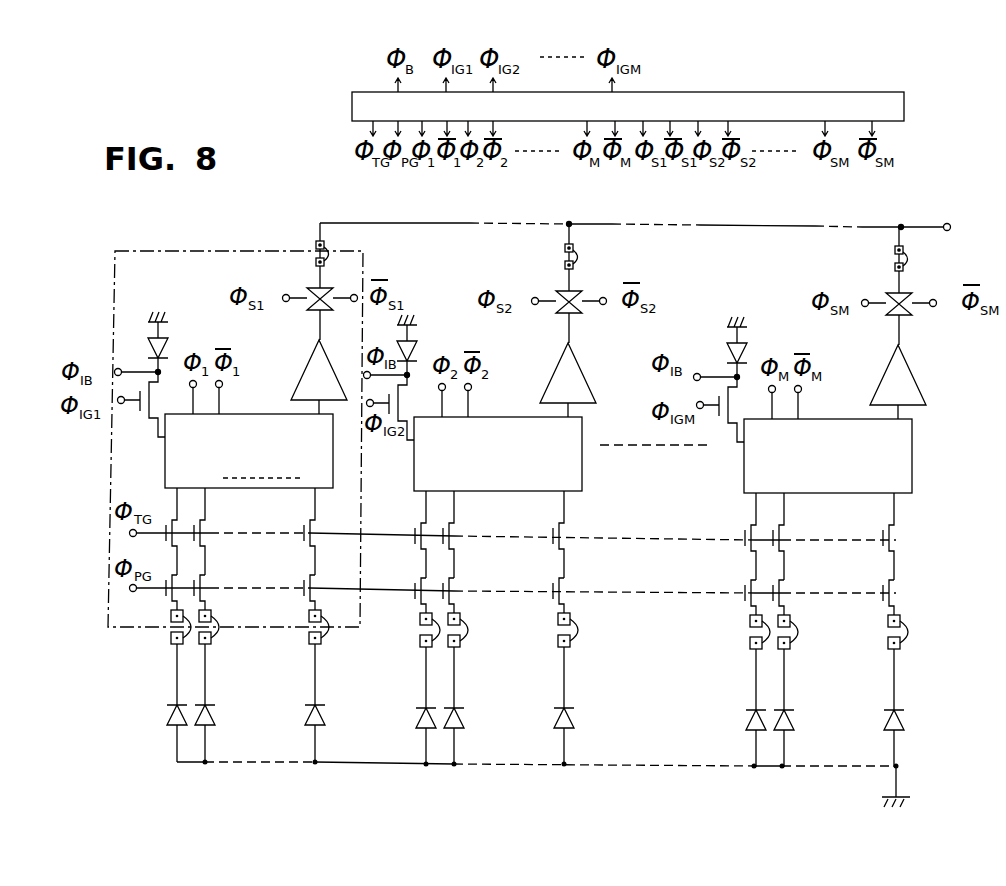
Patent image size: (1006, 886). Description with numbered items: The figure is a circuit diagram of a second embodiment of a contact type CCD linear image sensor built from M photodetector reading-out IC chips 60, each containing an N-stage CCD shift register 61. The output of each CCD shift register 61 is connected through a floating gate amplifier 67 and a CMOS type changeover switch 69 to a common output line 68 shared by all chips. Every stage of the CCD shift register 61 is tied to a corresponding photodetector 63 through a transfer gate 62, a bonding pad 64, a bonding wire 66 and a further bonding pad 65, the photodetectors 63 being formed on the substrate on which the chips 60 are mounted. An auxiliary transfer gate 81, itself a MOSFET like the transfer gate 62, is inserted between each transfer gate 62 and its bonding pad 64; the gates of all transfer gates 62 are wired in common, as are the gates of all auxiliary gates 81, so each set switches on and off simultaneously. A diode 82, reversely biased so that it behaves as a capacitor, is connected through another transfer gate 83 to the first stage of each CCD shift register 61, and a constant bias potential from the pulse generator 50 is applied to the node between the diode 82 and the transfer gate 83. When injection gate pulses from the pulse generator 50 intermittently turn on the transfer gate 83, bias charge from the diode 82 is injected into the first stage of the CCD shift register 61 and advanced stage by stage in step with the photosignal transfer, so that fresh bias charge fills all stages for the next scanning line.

The pulse generator 50 is at (352, 100).
The photodetector reading-out IC chip 60 is at (126, 627).
The CCD shift register 61 is at (158, 447).
The transfer gate 62 is at (305, 526).
The photodetector 63 is at (304, 720).
The bonding pad 64 is at (308, 624).
The bonding pad 65 is at (310, 640).
The bonding wire 66 is at (188, 638).
The floating gate amplifier 67 is at (300, 381).
The common output line 68 is at (768, 225).
The CMOS type changeover switch 69 is at (313, 287).
The auxiliary transfer gate 81 is at (305, 580).
The diode 82 is at (168, 352).
The transfer gate 83 is at (142, 417).